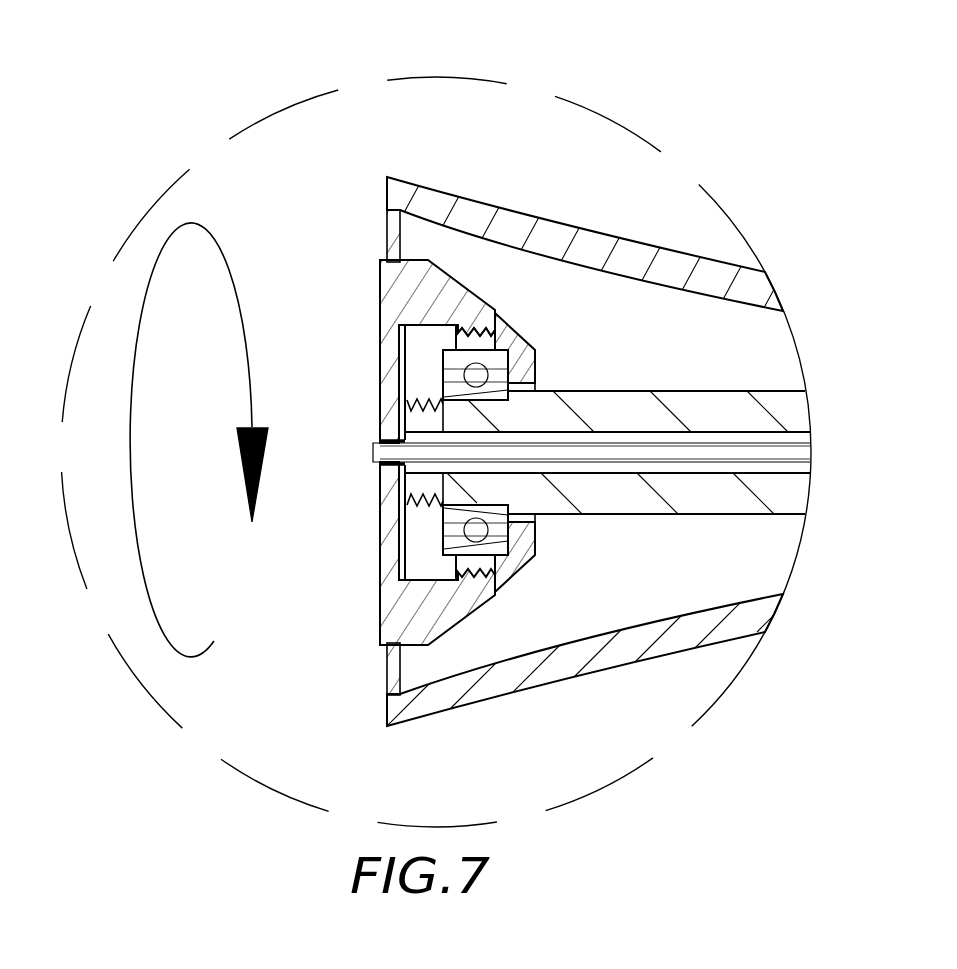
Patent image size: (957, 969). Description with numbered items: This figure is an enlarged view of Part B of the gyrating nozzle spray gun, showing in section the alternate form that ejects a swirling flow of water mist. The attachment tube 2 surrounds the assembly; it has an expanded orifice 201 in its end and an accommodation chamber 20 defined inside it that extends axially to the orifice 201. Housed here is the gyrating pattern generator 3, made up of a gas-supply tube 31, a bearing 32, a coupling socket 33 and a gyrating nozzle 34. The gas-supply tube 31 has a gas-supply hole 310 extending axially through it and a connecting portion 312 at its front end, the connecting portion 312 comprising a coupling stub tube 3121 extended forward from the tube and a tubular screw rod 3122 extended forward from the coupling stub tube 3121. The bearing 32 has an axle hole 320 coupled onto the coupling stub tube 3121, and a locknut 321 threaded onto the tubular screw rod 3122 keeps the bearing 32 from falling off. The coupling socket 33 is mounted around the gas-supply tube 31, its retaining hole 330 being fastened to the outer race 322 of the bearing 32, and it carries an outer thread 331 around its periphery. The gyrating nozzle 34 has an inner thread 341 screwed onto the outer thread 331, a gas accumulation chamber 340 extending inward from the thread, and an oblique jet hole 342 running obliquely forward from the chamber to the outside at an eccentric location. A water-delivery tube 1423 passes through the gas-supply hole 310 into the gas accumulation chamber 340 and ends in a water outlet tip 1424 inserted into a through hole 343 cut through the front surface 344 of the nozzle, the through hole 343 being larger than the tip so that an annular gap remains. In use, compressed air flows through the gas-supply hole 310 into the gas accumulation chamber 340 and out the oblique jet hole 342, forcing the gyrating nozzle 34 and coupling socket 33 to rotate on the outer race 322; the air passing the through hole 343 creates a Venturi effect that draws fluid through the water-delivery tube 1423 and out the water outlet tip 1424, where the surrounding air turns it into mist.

The Part B is at (435, 77).
The attachment tube 2 is at (598, 252).
The accommodation chamber 20 is at (640, 308).
The expanded orifice 201 is at (400, 218).
The gyrating pattern generator 3 is at (875, 360).
The gas-supply tube 31 is at (780, 397).
The gas-supply hole 310 is at (822, 431).
The connecting portion 312 is at (546, 760).
The coupling stub tube 3121 is at (487, 500).
The tubular screw rod 3122 is at (425, 488).
The bearing 32 is at (303, 343).
The axle hole 320 is at (400, 432).
The locknut 321 is at (505, 390).
The outer race 322 is at (505, 364).
The coupling socket 33 is at (538, 168).
The retaining hole 330 is at (507, 350).
The outer thread 331 is at (477, 327).
The gyrating nozzle 34 is at (427, 273).
The gas accumulation chamber 340 is at (396, 527).
The inner thread 341 is at (473, 327).
The oblique jet hole 342 is at (387, 577).
The through hole 343 is at (378, 502).
The front surface 344 is at (380, 313).
The water-delivery tube 1423 is at (738, 460).
The water outlet tip 1424 is at (380, 450).